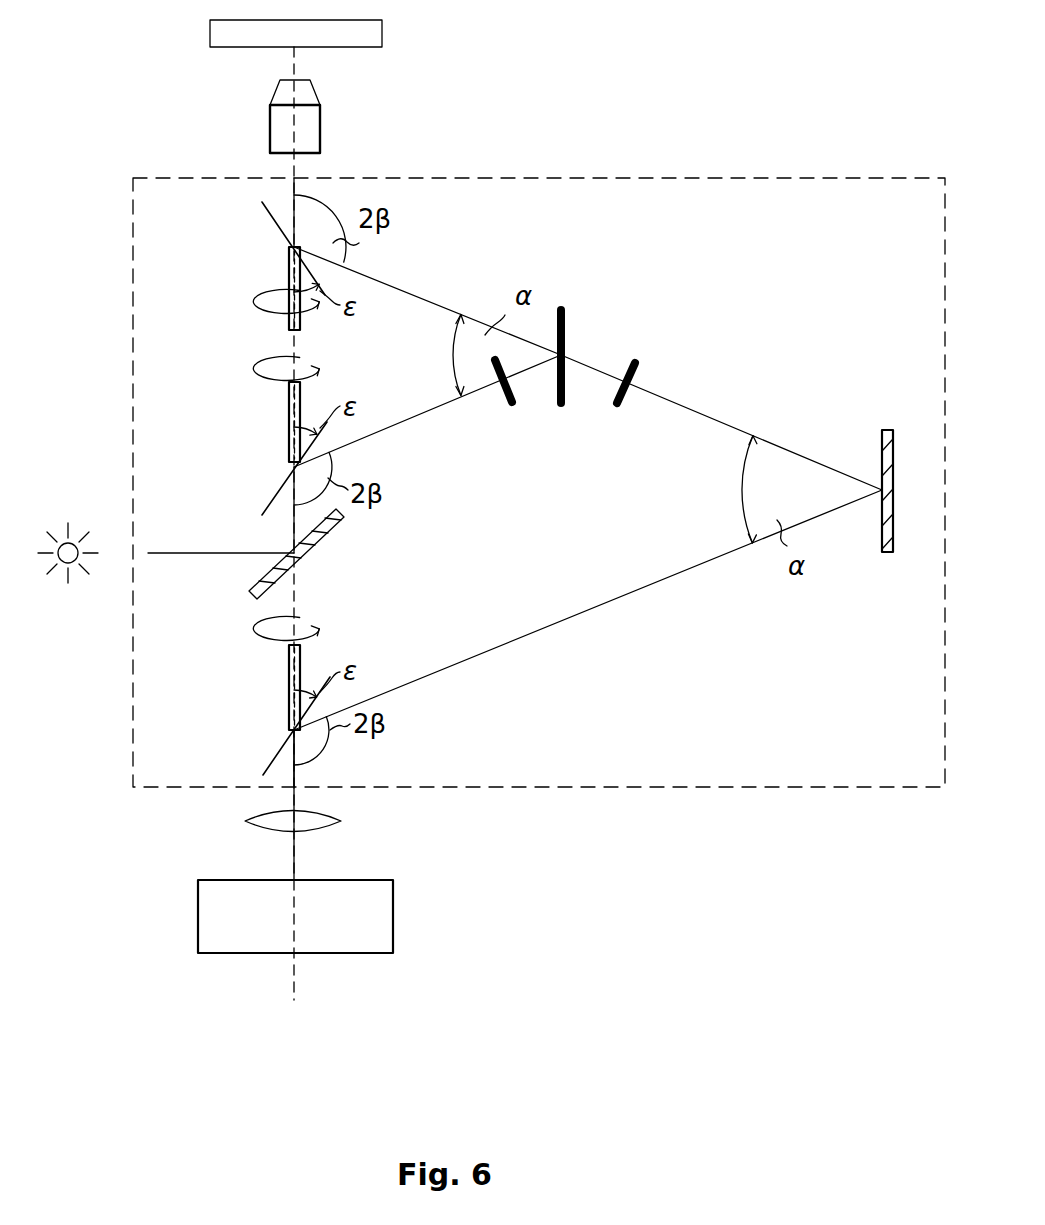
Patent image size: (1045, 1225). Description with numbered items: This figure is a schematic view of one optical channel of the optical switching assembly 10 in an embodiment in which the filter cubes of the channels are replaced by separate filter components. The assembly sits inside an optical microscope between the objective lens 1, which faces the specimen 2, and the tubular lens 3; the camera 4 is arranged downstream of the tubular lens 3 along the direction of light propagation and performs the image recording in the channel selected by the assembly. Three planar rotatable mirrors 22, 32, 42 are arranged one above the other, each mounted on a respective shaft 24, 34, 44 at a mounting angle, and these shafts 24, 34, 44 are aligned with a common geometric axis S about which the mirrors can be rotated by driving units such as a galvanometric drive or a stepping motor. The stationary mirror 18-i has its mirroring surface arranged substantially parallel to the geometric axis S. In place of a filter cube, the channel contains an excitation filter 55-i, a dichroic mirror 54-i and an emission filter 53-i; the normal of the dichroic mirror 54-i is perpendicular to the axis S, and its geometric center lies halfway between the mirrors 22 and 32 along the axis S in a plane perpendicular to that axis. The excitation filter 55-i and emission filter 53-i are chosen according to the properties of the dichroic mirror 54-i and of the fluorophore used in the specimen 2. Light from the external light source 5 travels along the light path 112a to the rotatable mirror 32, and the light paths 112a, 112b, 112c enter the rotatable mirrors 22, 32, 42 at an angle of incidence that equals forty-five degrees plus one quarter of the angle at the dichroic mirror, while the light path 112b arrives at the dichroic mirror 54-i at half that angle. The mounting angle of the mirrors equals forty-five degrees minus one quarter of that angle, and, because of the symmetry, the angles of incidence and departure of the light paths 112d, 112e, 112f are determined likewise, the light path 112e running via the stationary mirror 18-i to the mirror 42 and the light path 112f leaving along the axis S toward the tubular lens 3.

The objective lens 1 is at (322, 132).
The specimen 2 is at (384, 35).
The tubular lens 3 is at (335, 823).
The camera 4 is at (395, 918).
The external light source 5 is at (68, 536).
The optical switching assembly 10 is at (804, 178).
The rotatable mirror 22 is at (277, 218).
The shaft 24 is at (288, 283).
The rotatable mirror 32 is at (273, 494).
The shaft 34 is at (288, 421).
The rotatable mirror 42 is at (270, 765).
The shaft 44 is at (290, 690).
The stationary mirror 18-i is at (888, 555).
The emission filter 53-i is at (638, 366).
The dichroic mirror 54-i is at (566, 330).
The excitation filter 55-i is at (514, 406).
The light path 112a is at (190, 555).
The light path 112b is at (388, 430).
The light path 112c is at (395, 286).
The light path 112d is at (712, 411).
The light path 112e is at (545, 630).
The light path 112f is at (300, 768).
The geometric axis S is at (300, 68).